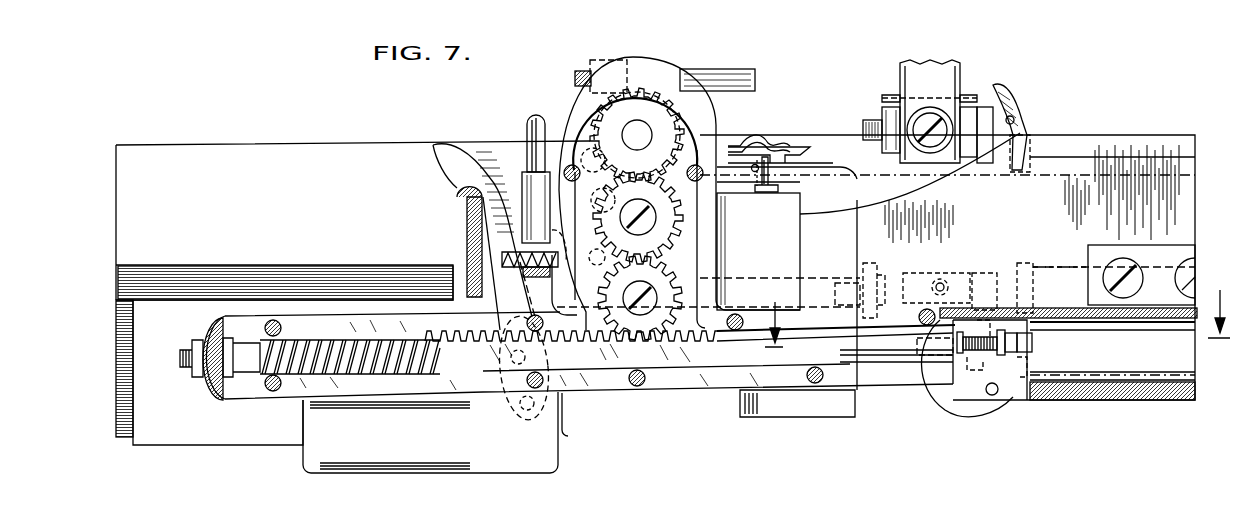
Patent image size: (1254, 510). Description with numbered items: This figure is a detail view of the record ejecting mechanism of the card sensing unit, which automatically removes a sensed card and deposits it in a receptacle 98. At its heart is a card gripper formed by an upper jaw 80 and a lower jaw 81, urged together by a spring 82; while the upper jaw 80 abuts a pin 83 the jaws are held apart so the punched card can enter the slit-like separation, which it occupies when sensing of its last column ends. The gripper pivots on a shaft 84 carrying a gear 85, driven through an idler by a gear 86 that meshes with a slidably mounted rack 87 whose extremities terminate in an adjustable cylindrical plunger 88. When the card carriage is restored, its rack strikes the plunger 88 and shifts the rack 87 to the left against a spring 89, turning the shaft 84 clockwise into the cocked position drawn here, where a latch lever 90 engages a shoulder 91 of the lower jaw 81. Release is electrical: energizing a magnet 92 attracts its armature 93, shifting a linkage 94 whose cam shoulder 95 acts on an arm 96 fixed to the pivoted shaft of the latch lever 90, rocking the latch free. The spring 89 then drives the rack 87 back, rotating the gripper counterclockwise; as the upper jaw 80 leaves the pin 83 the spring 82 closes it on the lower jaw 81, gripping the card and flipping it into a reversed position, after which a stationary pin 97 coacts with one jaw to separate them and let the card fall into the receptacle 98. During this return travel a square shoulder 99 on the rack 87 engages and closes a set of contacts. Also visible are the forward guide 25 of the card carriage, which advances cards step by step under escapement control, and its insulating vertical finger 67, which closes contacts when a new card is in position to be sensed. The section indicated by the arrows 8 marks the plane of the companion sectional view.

The section line 8- 8 is at (997, 328).
The forward guide 25 is at (1000, 114).
The vertical finger 67 is at (930, 62).
The upper jaw 80 is at (793, 151).
The lower jaw 81 is at (845, 176).
The spring 82 is at (757, 140).
The pin 83 is at (777, 182).
The shaft 84 is at (642, 132).
The gear 85 is at (687, 125).
The gear 86 is at (640, 339).
The rack 87 is at (580, 357).
The adjustable cylindrical plunger 88 is at (1033, 347).
The spring 89 is at (383, 360).
The latch lever 90 is at (568, 150).
The shoulder 91 is at (572, 108).
The magnet 92 is at (1060, 267).
The armature 93 is at (983, 273).
The linkage 94 is at (888, 275).
The cam shoulder 95 is at (463, 224).
The arm 96 is at (673, 267).
The stationary pin 97 is at (522, 128).
The receptacle 98 is at (342, 309).
The square shoulder 99 is at (845, 330).